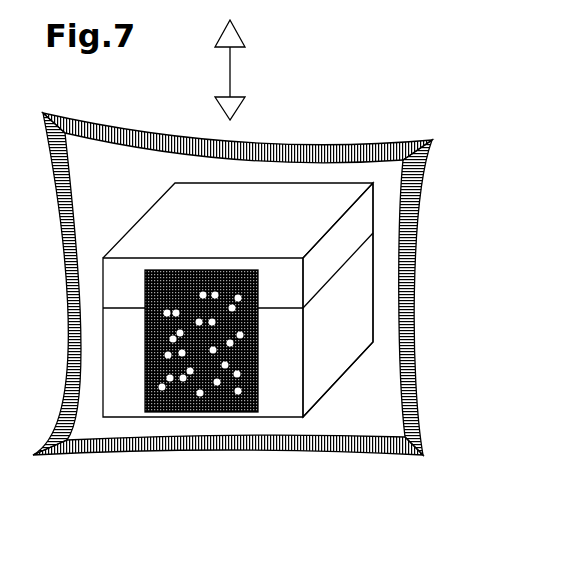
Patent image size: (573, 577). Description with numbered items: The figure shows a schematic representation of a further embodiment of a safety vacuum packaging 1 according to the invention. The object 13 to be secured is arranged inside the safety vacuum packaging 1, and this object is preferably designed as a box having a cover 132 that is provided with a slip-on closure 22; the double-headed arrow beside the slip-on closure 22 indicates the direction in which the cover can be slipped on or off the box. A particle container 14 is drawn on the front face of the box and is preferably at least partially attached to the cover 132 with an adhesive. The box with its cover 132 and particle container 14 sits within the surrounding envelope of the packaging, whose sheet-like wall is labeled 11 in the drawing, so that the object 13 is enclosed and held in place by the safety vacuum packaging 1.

The safety vacuum packaging 1 is at (255, 258).
The sheet / frame 11 is at (410, 258).
The object to be secured 13 is at (307, 292).
The cover 132 is at (310, 220).
The particle container 14 is at (180, 397).
The slip-on closure 22 is at (261, 70).